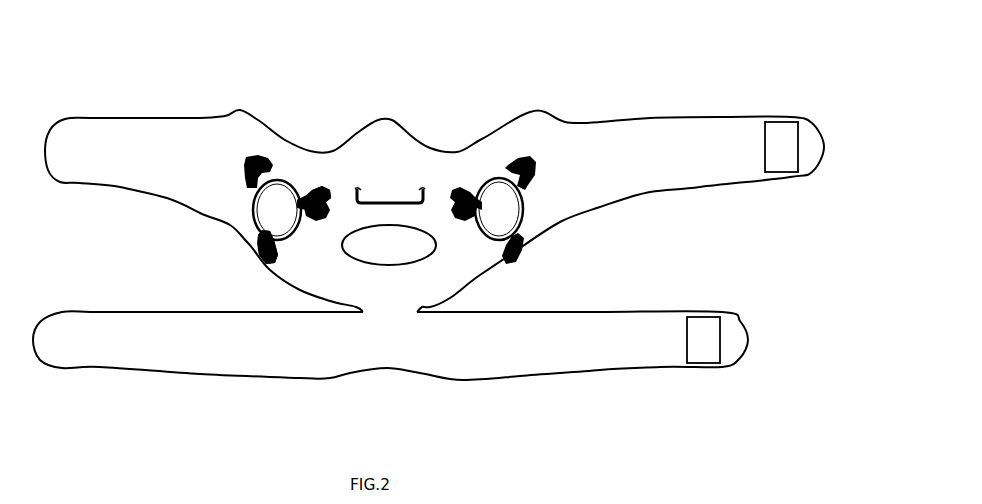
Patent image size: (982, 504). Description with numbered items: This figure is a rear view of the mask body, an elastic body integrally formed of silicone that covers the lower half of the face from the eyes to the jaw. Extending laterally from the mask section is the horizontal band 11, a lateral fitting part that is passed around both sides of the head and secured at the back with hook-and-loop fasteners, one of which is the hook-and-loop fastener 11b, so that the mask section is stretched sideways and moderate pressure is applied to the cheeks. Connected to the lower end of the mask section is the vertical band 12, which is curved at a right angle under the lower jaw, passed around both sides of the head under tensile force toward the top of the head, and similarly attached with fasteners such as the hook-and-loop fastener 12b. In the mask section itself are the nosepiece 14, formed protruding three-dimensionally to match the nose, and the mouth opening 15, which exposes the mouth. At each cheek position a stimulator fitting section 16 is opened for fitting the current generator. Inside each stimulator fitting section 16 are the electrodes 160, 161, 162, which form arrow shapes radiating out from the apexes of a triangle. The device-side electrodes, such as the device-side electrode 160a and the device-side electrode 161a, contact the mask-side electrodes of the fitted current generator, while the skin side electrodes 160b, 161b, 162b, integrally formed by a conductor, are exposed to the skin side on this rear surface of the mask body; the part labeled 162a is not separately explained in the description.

The horizontal band 11 is at (694, 118).
The hook-and-loop fastener 11b is at (781, 130).
The vertical band 12 is at (212, 373).
The hook-and-loop fastener 12b is at (702, 322).
The nosepiece 14 is at (403, 190).
The mouth opening 15 is at (425, 228).
The stimulator fitting section 16 is at (273, 212).
The electrode 160 is at (258, 182).
The device-side electrode 160a is at (288, 185).
The skin side electrode 160b is at (250, 157).
The electrode 161 is at (312, 190).
The device-side electrode 161a is at (305, 188).
The skin side electrode 161b is at (318, 212).
The electrode 162 is at (283, 258).
The third magnet upper portion 162a is at (268, 228).
The skin side electrode 162b is at (278, 262).